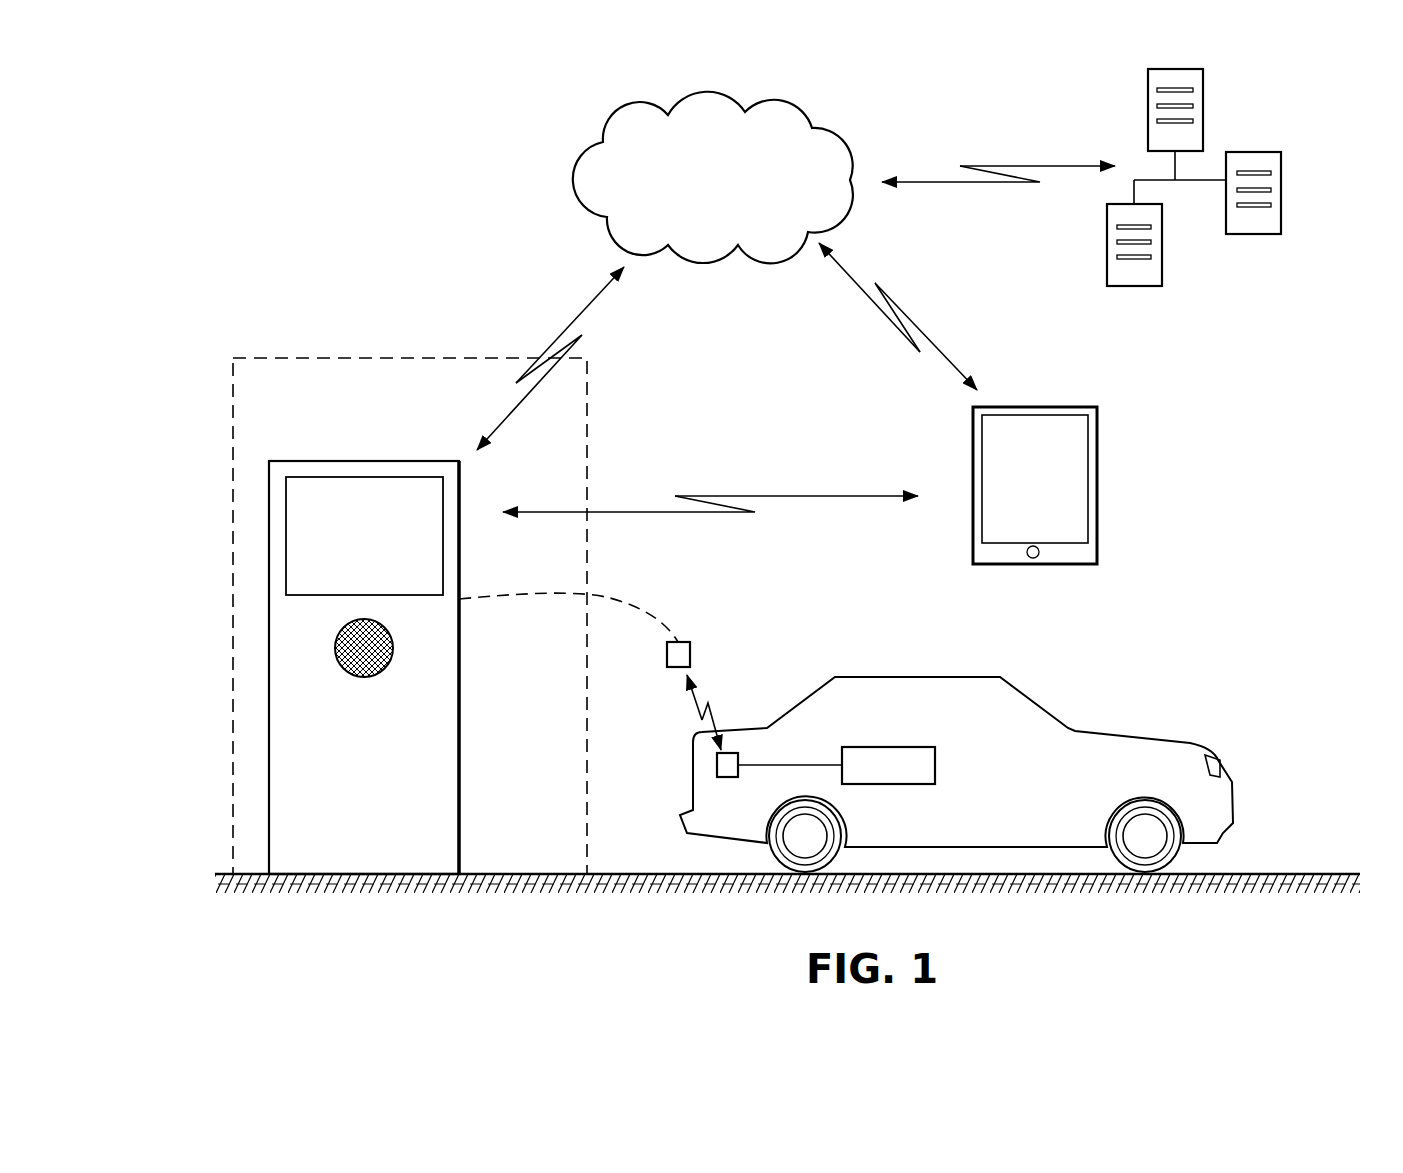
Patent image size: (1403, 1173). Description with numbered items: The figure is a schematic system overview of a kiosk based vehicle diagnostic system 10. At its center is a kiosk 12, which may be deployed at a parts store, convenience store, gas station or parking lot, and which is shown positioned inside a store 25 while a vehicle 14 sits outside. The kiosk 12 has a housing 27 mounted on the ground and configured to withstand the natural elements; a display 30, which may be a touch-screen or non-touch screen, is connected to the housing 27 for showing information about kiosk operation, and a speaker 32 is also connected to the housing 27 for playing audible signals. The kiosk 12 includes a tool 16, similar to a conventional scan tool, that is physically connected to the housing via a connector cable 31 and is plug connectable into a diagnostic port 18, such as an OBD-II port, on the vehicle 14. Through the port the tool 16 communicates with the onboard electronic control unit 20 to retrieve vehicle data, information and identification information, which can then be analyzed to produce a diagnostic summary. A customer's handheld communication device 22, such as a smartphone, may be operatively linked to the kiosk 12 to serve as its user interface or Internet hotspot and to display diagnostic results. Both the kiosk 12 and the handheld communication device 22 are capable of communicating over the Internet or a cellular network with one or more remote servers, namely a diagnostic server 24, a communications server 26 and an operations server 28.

The vehicle diagnostic system 10 is at (428, 162).
The kiosk 12 is at (398, 631).
The vehicle 14 is at (956, 742).
The tool 16 is at (690, 651).
The diagnostic port 18 is at (723, 777).
The electronic control unit 20 is at (883, 747).
The handheld communication device 22 is at (1098, 430).
The diagnostic server 24 is at (1107, 233).
The store 25 is at (292, 358).
The communications server 26 is at (1281, 163).
The housing 27 is at (459, 767).
The operations server 28 is at (1203, 82).
The display 30 is at (402, 477).
The connector cable 31 is at (637, 603).
The speaker 32 is at (346, 674).